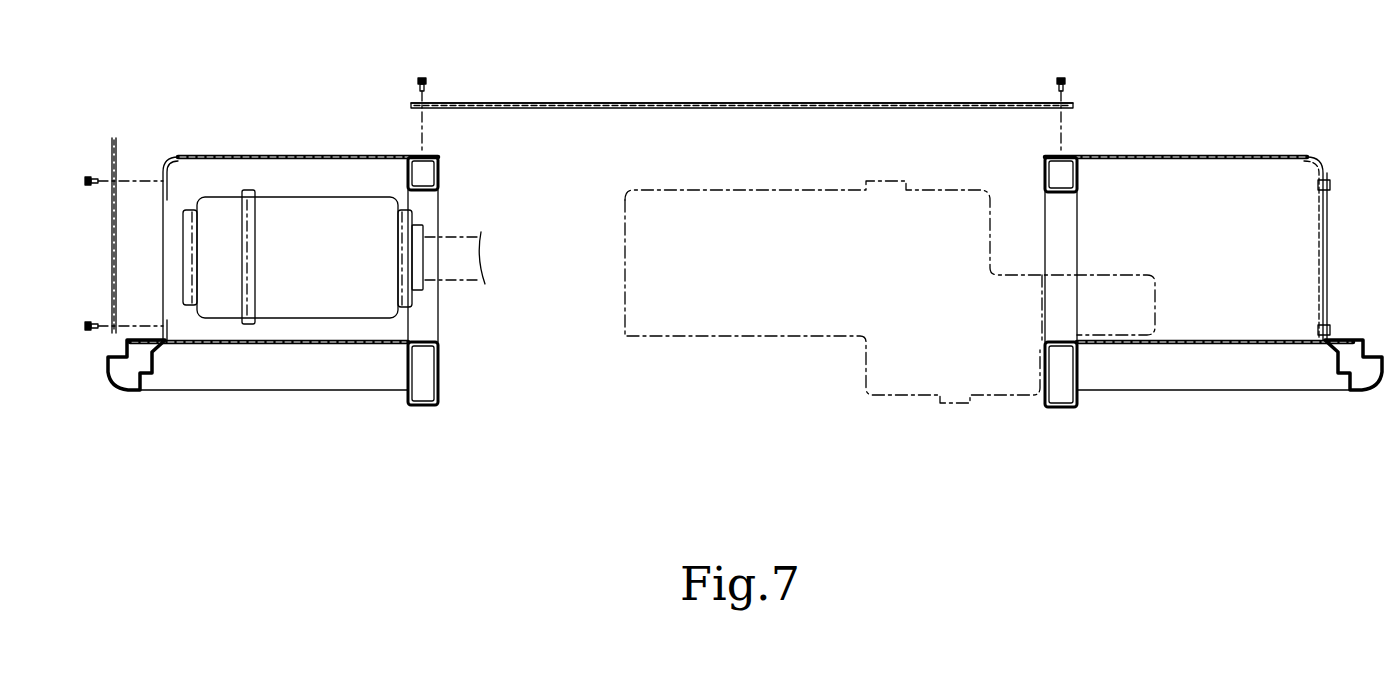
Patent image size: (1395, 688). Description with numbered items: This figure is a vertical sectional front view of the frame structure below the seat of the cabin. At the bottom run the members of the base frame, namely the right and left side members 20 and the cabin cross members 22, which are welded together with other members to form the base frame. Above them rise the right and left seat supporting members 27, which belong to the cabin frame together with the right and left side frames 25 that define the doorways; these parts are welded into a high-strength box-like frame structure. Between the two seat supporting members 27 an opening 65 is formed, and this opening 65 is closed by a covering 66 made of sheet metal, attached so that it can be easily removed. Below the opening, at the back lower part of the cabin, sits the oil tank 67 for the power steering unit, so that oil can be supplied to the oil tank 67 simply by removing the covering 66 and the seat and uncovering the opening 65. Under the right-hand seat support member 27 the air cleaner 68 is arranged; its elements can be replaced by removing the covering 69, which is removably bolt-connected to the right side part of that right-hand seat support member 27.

The side member 20 is at (420, 406).
The cabin cross member 22 is at (284, 391).
The side frame 25 is at (120, 386).
The seat supporting member 27 is at (250, 152).
The opening 65 is at (632, 130).
The covering 66 is at (766, 103).
The oil tank 67 is at (780, 338).
The air cleaner 68 is at (309, 196).
The covering 69 is at (113, 150).